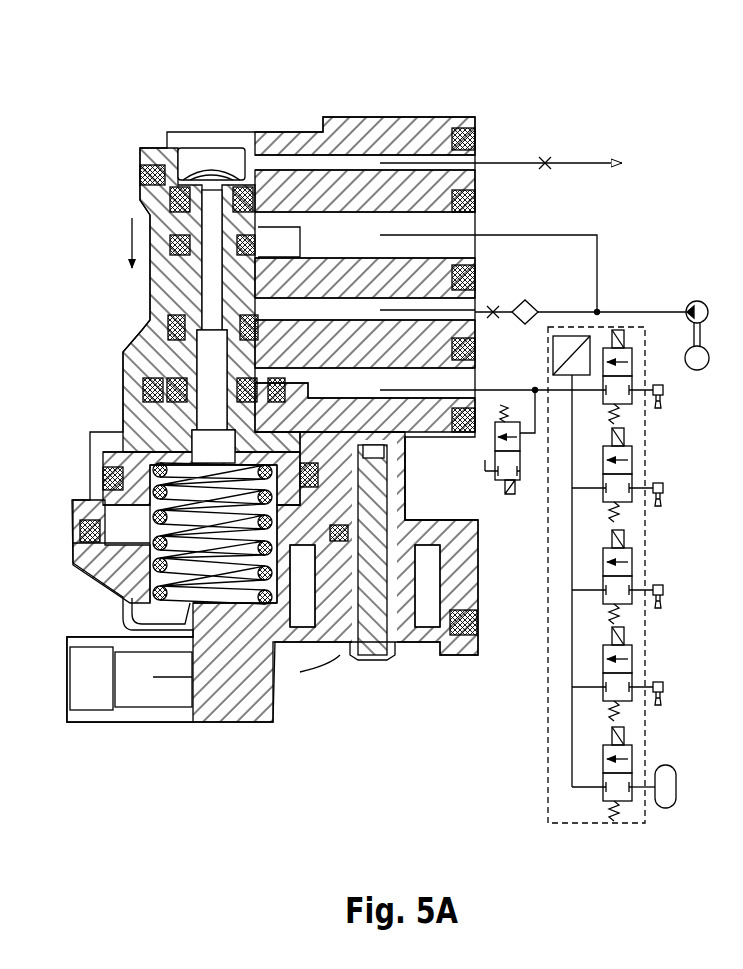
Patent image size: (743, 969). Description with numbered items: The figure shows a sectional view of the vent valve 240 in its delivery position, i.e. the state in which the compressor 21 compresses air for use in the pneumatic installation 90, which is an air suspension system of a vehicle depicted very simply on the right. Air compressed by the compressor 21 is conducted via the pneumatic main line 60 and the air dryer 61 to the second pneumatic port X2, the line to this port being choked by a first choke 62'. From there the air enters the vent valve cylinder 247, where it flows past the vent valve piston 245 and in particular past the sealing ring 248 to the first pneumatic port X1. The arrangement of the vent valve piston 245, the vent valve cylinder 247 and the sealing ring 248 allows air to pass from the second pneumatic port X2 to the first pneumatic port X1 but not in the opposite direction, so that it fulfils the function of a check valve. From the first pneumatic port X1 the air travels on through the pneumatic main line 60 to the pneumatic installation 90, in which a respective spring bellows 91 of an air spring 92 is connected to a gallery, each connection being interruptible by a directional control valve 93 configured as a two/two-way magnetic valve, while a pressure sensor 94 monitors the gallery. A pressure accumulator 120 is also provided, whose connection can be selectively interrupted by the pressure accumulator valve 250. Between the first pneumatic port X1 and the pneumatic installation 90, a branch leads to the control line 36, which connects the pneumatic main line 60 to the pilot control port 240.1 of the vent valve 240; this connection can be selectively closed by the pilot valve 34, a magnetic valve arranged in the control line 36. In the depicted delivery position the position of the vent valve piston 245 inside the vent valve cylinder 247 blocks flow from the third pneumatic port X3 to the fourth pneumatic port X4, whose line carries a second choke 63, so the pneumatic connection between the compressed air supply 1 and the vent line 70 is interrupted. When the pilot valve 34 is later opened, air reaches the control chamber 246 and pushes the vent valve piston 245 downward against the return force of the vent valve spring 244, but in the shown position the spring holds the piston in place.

The vent valve 240 is at (138, 112).
The vent valve cylinder 247 is at (205, 160).
The vent valve piston 245 is at (150, 287).
The sealing ring 248 is at (142, 338).
The control chamber 246 is at (108, 545).
The vent valve spring 244 is at (247, 578).
The pilot control port 240.1 is at (478, 440).
The first pneumatic port X1 is at (478, 389).
The second pneumatic port X2 is at (478, 300).
The third pneumatic port X3 is at (478, 230).
The fourth pneumatic port X4 is at (478, 156).
The second choke 63 is at (546, 158).
The vent line 70 is at (588, 160).
The pneumatic main line 60 is at (545, 312).
The first choke 62' is at (501, 281).
The air dryer 61 is at (530, 302).
The pressure sensor 94 is at (572, 334).
The compressed air supply 1 is at (598, 310).
The compressor 21 is at (700, 295).
The pilot valve 34 is at (497, 472).
The control line 36 is at (532, 442).
The spring bellows 91 is at (660, 384).
The air spring 92 is at (670, 398).
The directional control valve 93 is at (608, 403).
The pressure accumulator valve 250 is at (610, 802).
The pressure accumulator 120 is at (676, 810).
The pneumatic installation 90 is at (622, 842).